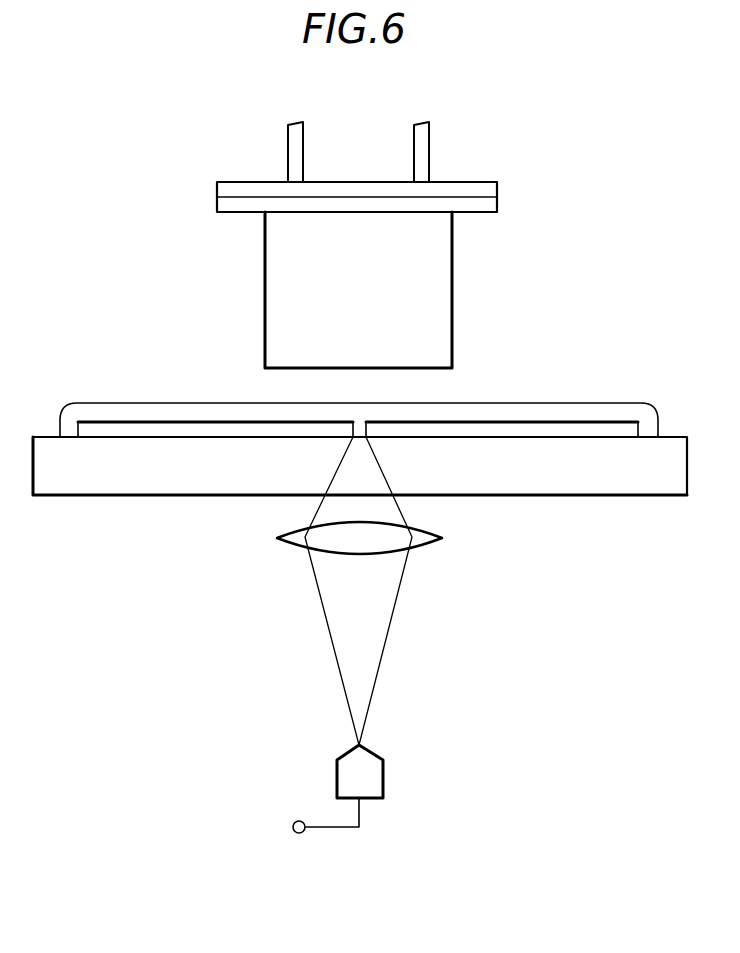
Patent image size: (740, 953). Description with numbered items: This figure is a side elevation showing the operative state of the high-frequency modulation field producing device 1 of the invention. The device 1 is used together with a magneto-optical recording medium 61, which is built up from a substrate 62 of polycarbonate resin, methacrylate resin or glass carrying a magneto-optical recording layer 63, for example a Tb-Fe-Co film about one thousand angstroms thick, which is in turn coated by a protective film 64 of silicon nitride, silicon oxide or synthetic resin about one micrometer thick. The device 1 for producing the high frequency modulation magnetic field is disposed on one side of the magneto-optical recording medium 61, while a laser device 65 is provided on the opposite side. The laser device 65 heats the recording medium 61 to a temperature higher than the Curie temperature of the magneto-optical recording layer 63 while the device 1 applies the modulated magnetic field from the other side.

The device for producing high frequency modulation magnetic field 1 is at (445, 260).
The magneto-optical recording medium 61 is at (360, 444).
The substrate 62 is at (557, 477).
The magneto-optical recording layer 63 is at (602, 427).
The protective film 64 is at (546, 415).
The laser device 65 is at (373, 783).